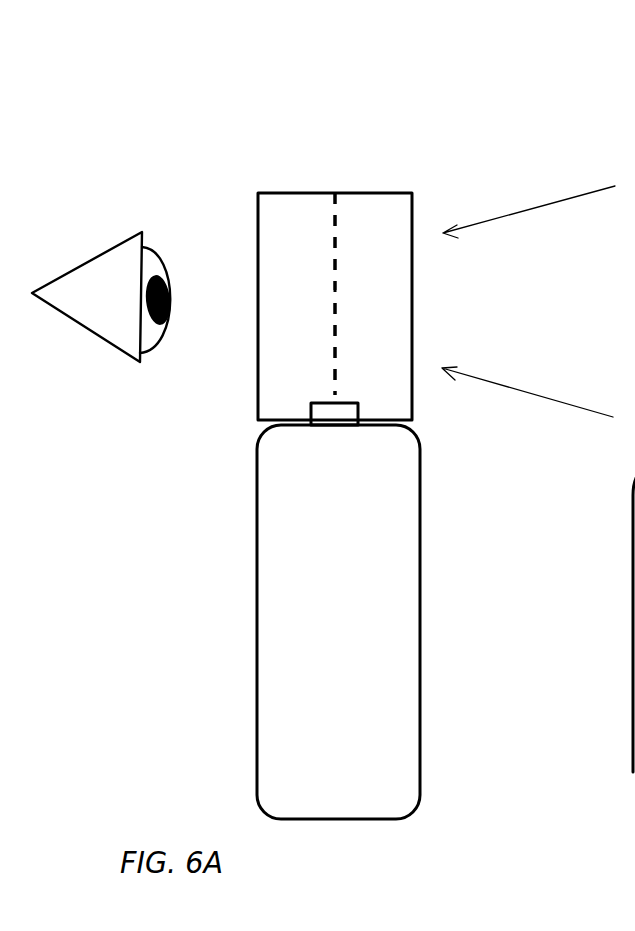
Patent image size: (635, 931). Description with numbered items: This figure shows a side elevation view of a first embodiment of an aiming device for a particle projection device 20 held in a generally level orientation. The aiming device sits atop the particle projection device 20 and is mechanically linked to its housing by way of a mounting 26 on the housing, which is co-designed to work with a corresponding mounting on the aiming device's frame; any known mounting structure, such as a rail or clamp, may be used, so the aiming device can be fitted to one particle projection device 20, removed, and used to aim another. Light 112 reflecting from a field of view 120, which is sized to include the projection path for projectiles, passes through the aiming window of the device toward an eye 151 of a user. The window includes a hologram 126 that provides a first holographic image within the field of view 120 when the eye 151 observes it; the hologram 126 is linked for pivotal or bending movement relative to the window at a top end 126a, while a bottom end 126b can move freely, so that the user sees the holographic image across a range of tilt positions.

The field of view 120 is at (328, 197).
The light 112 is at (473, 238).
The hologram 126 is at (333, 315).
The top end 126a is at (333, 230).
The bottom end 126b is at (340, 388).
The mounting 26 is at (362, 410).
The particle projection device 20 is at (338, 622).
The eye 151 is at (127, 320).